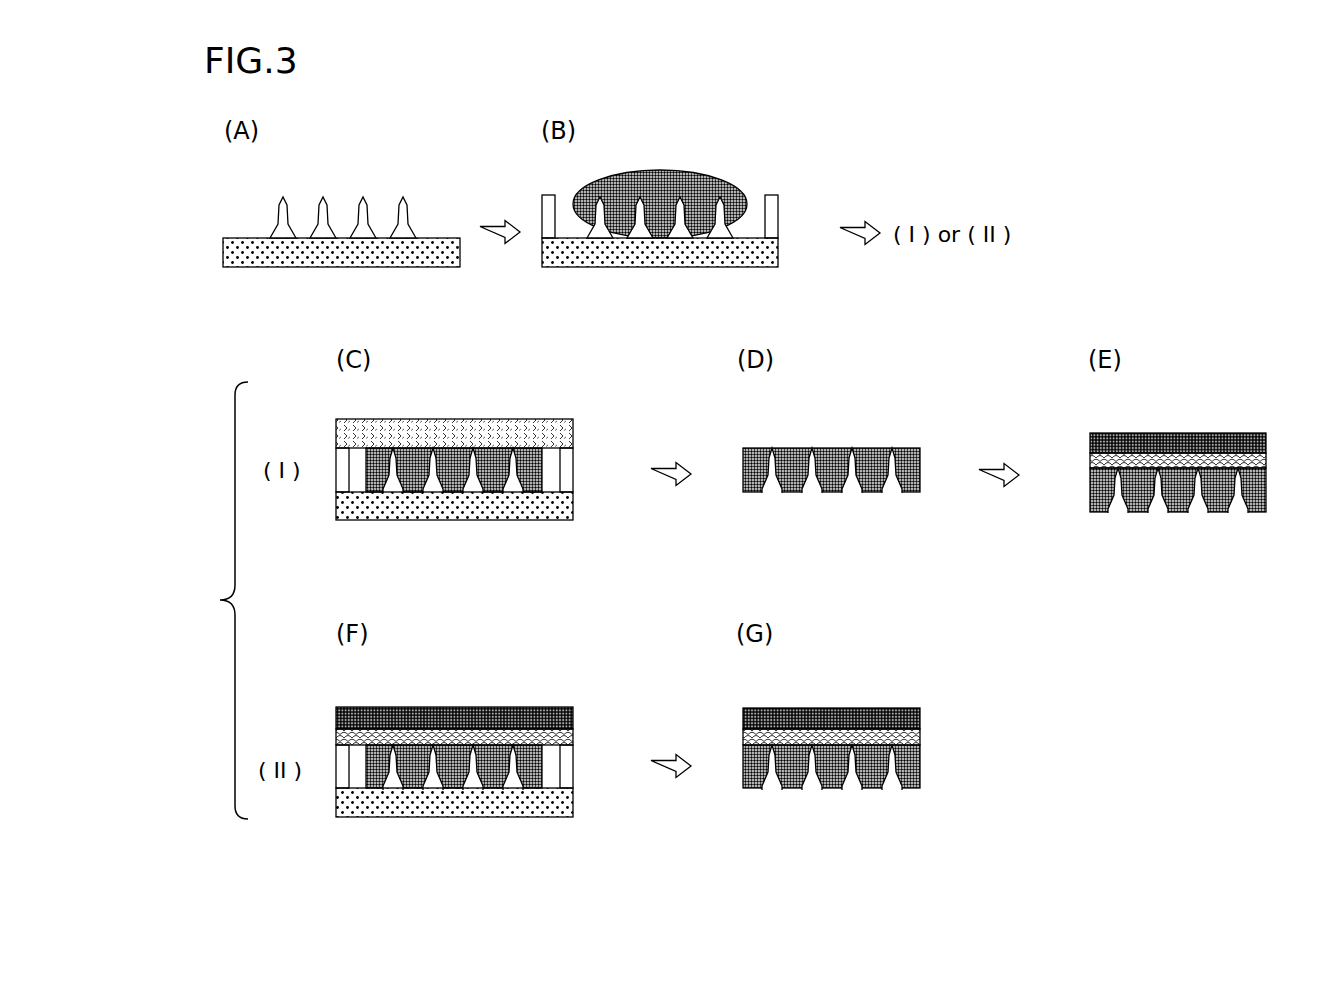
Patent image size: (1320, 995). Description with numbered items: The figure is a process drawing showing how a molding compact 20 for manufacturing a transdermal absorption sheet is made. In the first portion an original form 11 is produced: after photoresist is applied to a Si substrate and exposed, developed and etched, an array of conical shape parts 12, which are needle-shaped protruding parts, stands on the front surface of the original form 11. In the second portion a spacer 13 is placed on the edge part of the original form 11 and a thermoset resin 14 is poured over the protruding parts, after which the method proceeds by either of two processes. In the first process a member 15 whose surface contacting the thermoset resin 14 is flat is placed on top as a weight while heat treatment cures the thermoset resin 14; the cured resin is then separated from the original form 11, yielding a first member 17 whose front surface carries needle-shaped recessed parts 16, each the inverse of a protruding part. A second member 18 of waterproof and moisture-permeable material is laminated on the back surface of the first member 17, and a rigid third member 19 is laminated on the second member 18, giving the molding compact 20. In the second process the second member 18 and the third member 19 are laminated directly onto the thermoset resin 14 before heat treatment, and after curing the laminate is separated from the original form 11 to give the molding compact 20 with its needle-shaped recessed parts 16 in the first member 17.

The original form 11 is at (373, 265).
The conical shape parts 12 is at (403, 228).
The spacer 13 is at (778, 212).
The thermoset resin 14 is at (660, 176).
The member 15 is at (452, 420).
The needle-shaped recessed parts 16 is at (762, 483).
The first member 17 is at (754, 448).
The second member 18 is at (1266, 457).
The third member 19 is at (1175, 433).
The molding compact 20 is at (1236, 402).